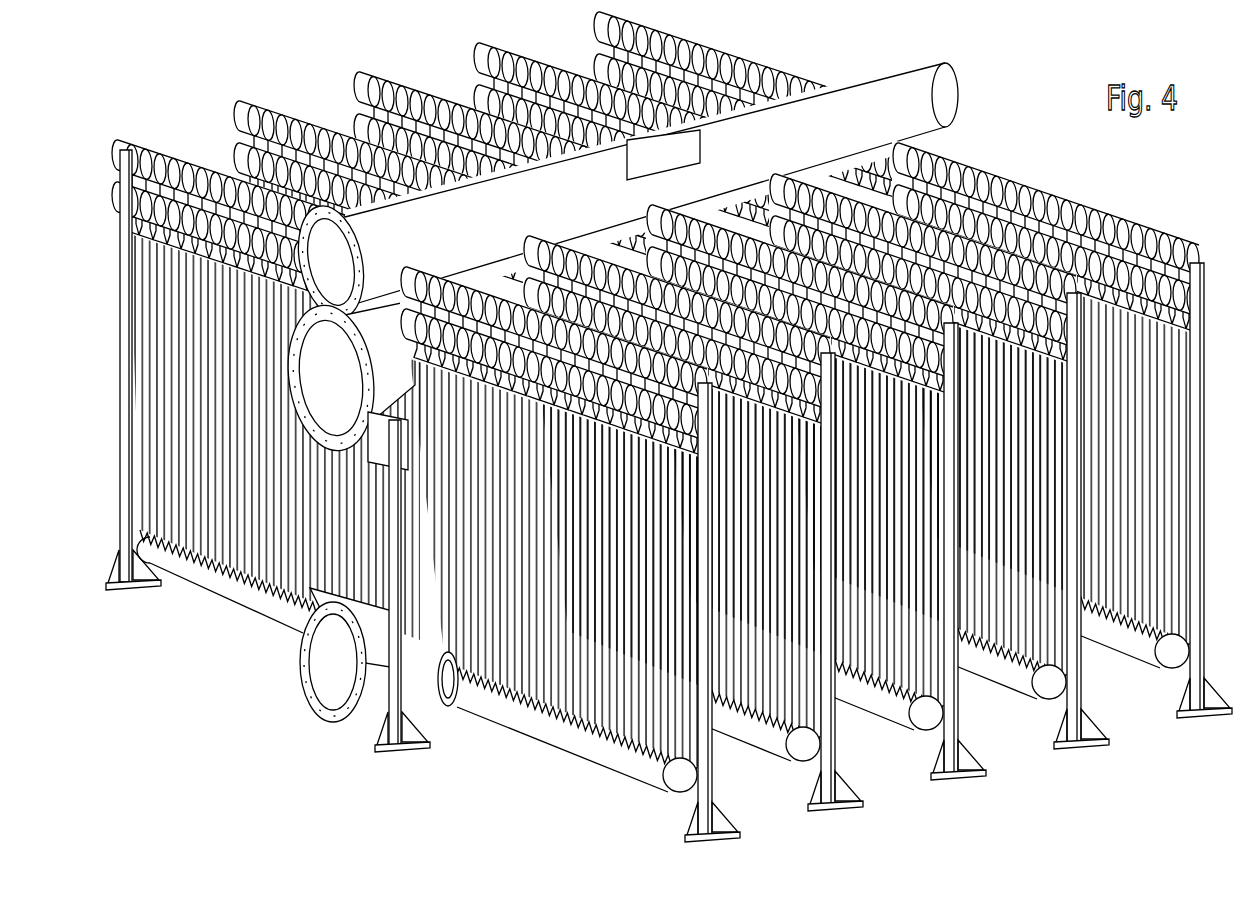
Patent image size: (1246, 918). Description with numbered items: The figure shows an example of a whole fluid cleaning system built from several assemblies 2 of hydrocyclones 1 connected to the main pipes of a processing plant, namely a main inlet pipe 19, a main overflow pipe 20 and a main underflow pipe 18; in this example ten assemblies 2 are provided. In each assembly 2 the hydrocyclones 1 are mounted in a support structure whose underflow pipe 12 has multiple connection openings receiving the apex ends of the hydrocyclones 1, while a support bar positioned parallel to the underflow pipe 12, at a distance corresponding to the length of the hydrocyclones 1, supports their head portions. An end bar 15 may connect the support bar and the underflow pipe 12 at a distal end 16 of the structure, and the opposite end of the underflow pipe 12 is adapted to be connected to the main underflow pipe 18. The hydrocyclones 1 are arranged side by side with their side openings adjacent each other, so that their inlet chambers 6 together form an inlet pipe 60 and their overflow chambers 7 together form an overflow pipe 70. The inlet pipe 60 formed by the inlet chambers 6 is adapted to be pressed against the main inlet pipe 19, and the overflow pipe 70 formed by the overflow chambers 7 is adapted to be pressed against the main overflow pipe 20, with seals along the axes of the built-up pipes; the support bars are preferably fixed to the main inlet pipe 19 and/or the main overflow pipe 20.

The hydrocyclone 1 is at (575, 683).
The assembly 2 is at (266, 94).
The inlet chamber 6 is at (231, 418).
The inlet pipe 60 is at (173, 222).
The overflow chamber 7 is at (263, 199).
The overflow pipe 70 is at (173, 218).
The underflow pipe 12 is at (612, 757).
The end bar 15 is at (722, 763).
The distal end 16 is at (733, 807).
The main underflow pipe 18 is at (343, 672).
The main inlet pipe 19 is at (346, 393).
The main overflow pipe 20 is at (880, 88).